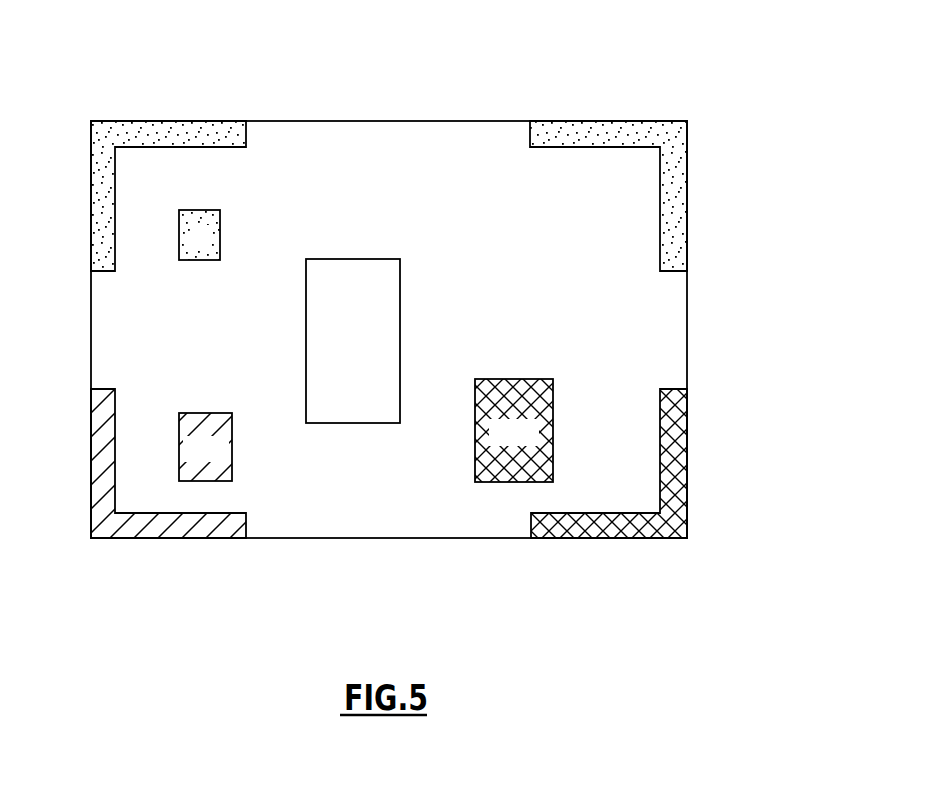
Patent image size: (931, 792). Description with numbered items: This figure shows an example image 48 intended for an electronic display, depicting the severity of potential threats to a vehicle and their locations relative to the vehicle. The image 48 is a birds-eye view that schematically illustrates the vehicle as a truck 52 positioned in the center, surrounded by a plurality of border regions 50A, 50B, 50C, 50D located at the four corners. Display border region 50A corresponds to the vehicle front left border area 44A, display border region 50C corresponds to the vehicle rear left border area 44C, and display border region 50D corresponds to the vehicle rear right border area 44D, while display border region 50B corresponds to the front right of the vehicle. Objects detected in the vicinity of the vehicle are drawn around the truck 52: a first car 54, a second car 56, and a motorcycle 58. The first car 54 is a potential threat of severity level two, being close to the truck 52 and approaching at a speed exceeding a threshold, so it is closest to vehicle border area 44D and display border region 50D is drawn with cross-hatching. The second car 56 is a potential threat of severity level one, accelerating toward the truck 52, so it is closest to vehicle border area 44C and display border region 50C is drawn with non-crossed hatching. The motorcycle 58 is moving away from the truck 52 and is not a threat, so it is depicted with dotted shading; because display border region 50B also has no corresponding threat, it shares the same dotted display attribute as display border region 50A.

The image 48 is at (426, 281).
The display border region 50A is at (97, 233).
The display border region 50B is at (683, 210).
The display border region 50C is at (97, 524).
The display border region 50D is at (619, 526).
The truck 52 is at (400, 303).
The first car 54 is at (513, 379).
The second car 56 is at (198, 413).
The motorcycle 58 is at (200, 261).
The vehicle front left border area 44A is at (304, 250).
The vehicle rear left border area 44C is at (303, 440).
The vehicle rear right border area 44D is at (404, 440).